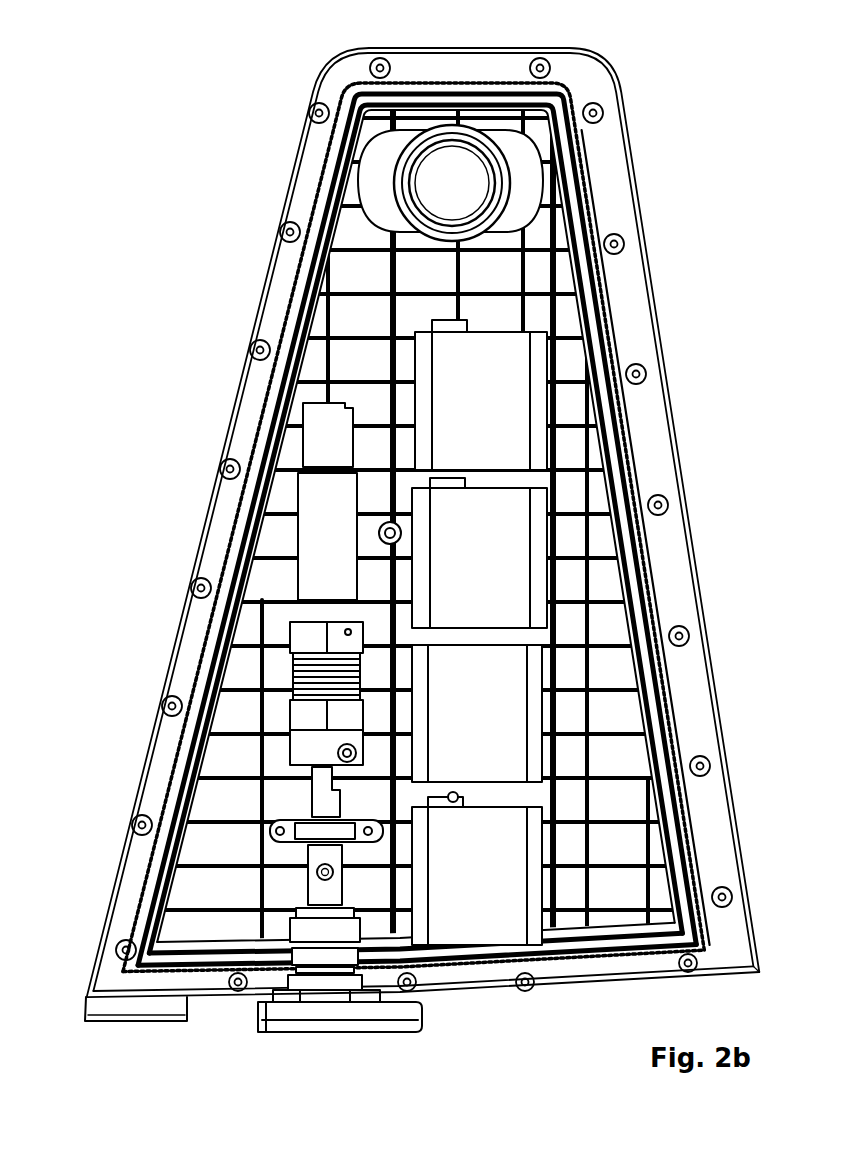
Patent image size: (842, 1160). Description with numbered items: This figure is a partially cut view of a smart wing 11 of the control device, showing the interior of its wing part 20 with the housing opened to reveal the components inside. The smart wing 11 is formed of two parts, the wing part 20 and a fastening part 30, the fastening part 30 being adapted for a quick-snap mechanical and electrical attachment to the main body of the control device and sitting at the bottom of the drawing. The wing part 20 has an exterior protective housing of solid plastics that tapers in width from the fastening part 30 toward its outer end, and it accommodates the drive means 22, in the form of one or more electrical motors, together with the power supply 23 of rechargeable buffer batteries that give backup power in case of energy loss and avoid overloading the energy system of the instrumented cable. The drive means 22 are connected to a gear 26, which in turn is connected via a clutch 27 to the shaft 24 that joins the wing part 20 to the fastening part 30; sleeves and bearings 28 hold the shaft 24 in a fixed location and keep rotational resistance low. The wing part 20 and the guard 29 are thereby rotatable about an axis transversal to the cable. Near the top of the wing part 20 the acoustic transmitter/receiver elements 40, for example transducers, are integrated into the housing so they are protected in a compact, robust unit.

The smart wing 11 is at (257, 100).
The wing part 20 is at (258, 222).
The acoustic transmitter/receiver elements 40 is at (462, 172).
The power supply 23 is at (520, 857).
The drive means 22 is at (335, 440).
The gear 26 is at (320, 515).
The clutch 27 is at (290, 680).
The sleeves and bearings 28 is at (292, 816).
The shaft 24 is at (318, 892).
The fastening part 30 is at (345, 1040).
The guard 29 is at (125, 1030).